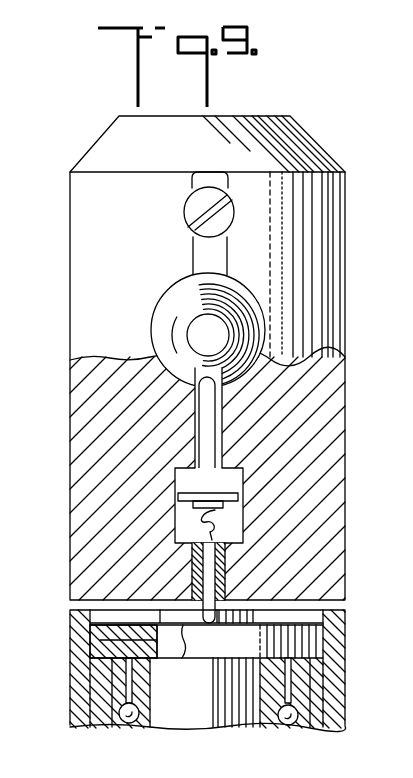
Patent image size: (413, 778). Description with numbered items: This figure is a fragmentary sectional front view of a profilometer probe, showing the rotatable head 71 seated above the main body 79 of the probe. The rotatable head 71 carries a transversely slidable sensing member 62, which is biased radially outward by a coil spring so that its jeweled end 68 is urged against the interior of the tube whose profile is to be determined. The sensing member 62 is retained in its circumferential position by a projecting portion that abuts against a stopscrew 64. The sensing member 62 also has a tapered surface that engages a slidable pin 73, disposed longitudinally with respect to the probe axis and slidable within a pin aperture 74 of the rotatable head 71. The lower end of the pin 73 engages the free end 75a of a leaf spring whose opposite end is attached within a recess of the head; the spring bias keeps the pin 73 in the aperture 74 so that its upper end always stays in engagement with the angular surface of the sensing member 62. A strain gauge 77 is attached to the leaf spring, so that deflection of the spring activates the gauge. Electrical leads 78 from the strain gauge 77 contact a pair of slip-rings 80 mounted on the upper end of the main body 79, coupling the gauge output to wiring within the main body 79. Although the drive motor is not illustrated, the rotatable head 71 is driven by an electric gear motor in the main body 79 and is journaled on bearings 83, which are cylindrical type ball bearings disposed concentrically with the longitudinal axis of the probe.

The rotatable head 71 is at (90, 215).
The stopscrew 64 is at (190, 212).
The sensing member 62 is at (175, 288).
The jeweled end 68 is at (199, 316).
The slidable pin 73 is at (200, 412).
The pin aperture 74 is at (197, 438).
The free end of leaf spring 75a is at (178, 498).
The strain gauge 77 is at (215, 510).
The electrical leads 78 is at (212, 537).
The main body 79 is at (97, 638).
The slip-rings 80 is at (307, 617).
The bearings 83 is at (118, 697).